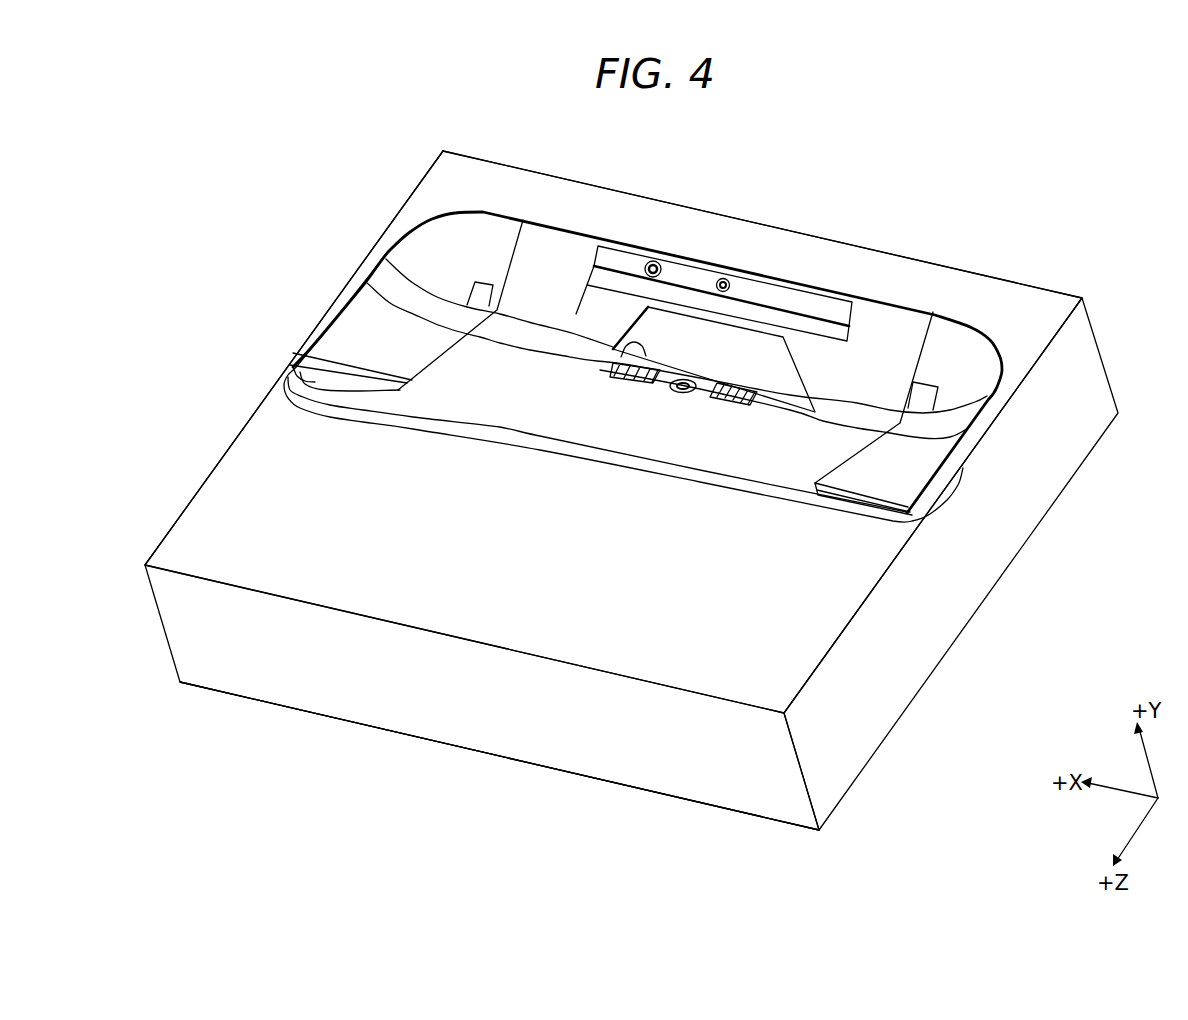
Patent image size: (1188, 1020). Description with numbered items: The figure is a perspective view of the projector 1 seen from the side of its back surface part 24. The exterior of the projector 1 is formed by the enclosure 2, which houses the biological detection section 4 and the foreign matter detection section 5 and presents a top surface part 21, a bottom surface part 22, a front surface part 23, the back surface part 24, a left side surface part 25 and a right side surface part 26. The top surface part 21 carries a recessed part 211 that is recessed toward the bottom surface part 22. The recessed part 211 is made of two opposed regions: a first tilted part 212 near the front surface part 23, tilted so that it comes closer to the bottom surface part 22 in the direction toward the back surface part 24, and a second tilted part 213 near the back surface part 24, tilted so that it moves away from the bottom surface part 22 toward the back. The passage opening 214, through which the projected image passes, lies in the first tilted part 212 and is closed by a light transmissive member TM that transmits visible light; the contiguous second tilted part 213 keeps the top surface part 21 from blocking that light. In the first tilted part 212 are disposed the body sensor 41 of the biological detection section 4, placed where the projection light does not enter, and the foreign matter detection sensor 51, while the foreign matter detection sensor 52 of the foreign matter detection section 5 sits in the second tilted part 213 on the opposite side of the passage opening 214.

The projector 1 is at (631, 484).
The enclosure 2 is at (631, 507).
The top surface part 21 is at (212, 505).
The bottom surface part 22 is at (440, 776).
The front surface part 23 is at (797, 206).
The back surface part 24 is at (571, 752).
The left side surface part 25 is at (1018, 520).
The right side surface part 26 is at (249, 320).
The recessed part 211 is at (418, 245).
The first tilted part 212 is at (874, 336).
The second tilted part 213 is at (745, 462).
The passage opening 214 is at (636, 374).
The biological detection section 4 is at (714, 242).
The body sensor 41 is at (655, 261).
The foreign matter detection section 5 is at (719, 310).
The foreign matter detection sensor 51 is at (726, 279).
The foreign matter detection sensor 52 is at (682, 394).
The light transmissive member TM is at (763, 357).